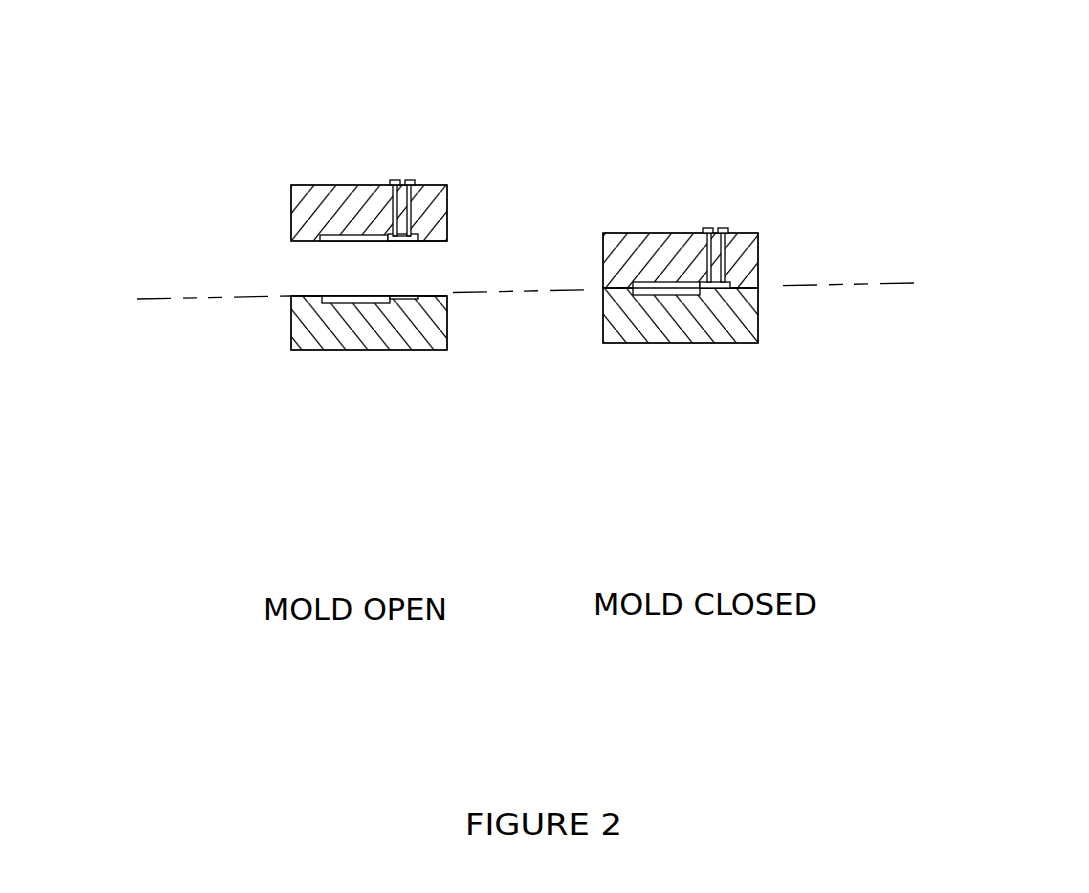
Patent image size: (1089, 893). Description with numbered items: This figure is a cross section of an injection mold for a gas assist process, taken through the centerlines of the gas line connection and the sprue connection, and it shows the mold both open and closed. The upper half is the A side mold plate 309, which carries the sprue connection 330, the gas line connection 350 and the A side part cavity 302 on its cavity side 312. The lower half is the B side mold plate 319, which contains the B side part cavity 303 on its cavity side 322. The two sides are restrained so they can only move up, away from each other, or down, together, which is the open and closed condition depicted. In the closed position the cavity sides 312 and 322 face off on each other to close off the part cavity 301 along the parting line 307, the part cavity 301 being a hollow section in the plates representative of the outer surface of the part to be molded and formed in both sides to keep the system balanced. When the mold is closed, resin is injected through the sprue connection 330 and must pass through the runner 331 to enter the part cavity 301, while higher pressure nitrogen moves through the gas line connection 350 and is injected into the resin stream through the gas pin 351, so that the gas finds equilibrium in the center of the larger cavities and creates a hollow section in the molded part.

The part cavity 301 is at (733, 387).
The A side part cavity 302 is at (289, 144).
The B side part cavity 303 is at (320, 394).
The parting line 307 is at (607, 273).
The A side mold plate 309 is at (521, 202).
The cavity side 312 is at (494, 198).
The B side mold plate 319 is at (535, 359).
The cavity side 322 is at (296, 262).
The sprue connection 330 is at (486, 156).
The runner 331 is at (818, 242).
The gas line connection 350 is at (458, 129).
The gas pin 351 is at (471, 337).